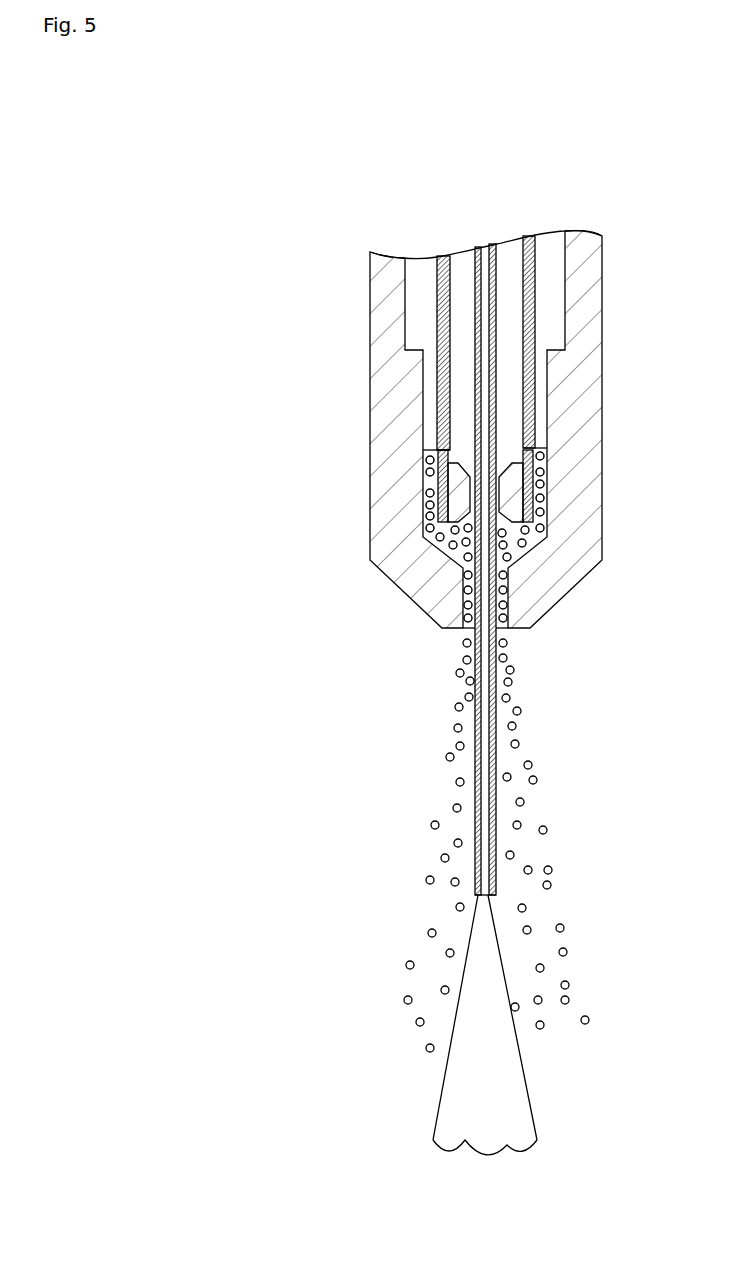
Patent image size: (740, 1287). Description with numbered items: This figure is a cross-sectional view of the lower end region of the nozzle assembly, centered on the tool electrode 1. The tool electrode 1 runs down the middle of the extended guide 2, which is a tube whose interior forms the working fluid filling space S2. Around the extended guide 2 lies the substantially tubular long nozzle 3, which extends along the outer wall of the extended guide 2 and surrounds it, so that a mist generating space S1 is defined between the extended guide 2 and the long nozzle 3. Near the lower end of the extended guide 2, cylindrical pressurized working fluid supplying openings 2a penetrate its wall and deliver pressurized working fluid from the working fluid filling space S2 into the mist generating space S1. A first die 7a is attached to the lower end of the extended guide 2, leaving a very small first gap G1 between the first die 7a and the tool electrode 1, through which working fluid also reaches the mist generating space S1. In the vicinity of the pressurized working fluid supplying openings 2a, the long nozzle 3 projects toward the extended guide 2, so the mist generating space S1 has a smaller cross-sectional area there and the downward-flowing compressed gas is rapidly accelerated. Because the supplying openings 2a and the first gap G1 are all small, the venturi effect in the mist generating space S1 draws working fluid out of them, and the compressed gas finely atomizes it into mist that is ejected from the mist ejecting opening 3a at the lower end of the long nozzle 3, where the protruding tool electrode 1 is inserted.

The tool electrode 1 is at (500, 245).
The extended guide 2 is at (435, 340).
The pressurized working fluid supplying opening 2a is at (425, 452).
The long nozzle 3 is at (600, 366).
The mist ejecting opening 3a is at (513, 634).
The first die 7a is at (505, 498).
The first gap G1 is at (540, 548).
The mist generating space S1 is at (550, 287).
The working fluid filling space S2 is at (460, 305).